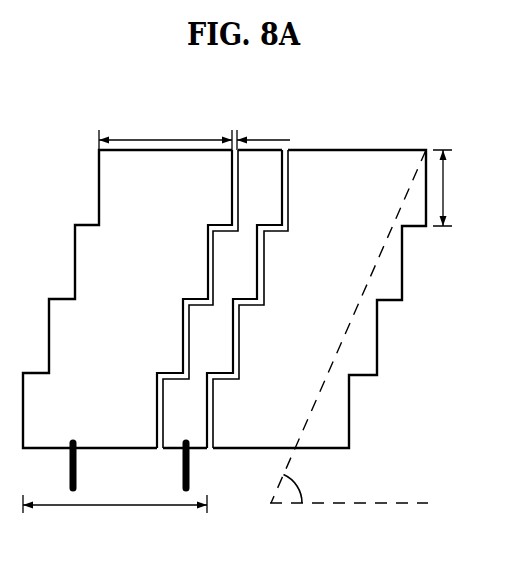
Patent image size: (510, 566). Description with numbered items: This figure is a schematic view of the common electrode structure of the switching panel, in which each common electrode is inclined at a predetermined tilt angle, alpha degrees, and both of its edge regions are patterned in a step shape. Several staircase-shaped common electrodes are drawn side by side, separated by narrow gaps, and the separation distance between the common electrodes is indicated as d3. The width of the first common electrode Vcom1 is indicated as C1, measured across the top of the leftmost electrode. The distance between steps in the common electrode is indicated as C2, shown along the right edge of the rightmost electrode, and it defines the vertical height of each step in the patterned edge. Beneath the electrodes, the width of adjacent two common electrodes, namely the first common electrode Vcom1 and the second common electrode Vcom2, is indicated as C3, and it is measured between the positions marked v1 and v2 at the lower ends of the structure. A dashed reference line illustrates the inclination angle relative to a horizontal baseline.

The width of the first common electrode C1 is at (165, 131).
The separation distance between the common electrodes d3 is at (279, 136).
The distance between steps in the common electrode C2 is at (455, 188).
The width of adjacent two common electrodes C3 is at (115, 512).
The first via v1 is at (91, 470).
The second via v2 is at (202, 470).